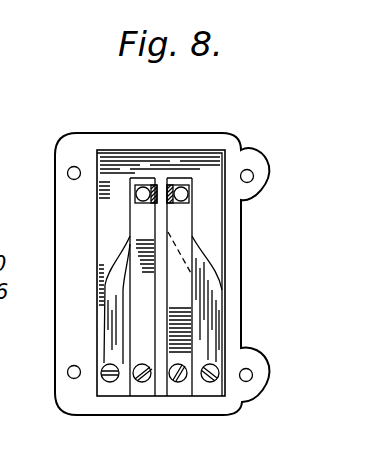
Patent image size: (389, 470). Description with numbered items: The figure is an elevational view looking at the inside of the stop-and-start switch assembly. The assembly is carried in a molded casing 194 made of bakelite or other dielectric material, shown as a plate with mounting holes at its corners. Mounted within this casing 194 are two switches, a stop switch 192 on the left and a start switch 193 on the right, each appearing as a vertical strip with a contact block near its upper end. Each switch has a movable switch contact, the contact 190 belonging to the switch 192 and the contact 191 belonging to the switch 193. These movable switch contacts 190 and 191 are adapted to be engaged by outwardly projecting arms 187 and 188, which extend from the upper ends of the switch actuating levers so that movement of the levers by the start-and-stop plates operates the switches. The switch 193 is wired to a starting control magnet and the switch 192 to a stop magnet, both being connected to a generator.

The outwardly projecting arm 187 is at (150, 186).
The outwardly projecting arm 188 is at (168, 185).
The movable switch contact 190 is at (130, 235).
The movable switch contact 191 is at (190, 234).
The switch 192 is at (140, 180).
The switch 193 is at (188, 176).
The molded casing 194 is at (242, 283).